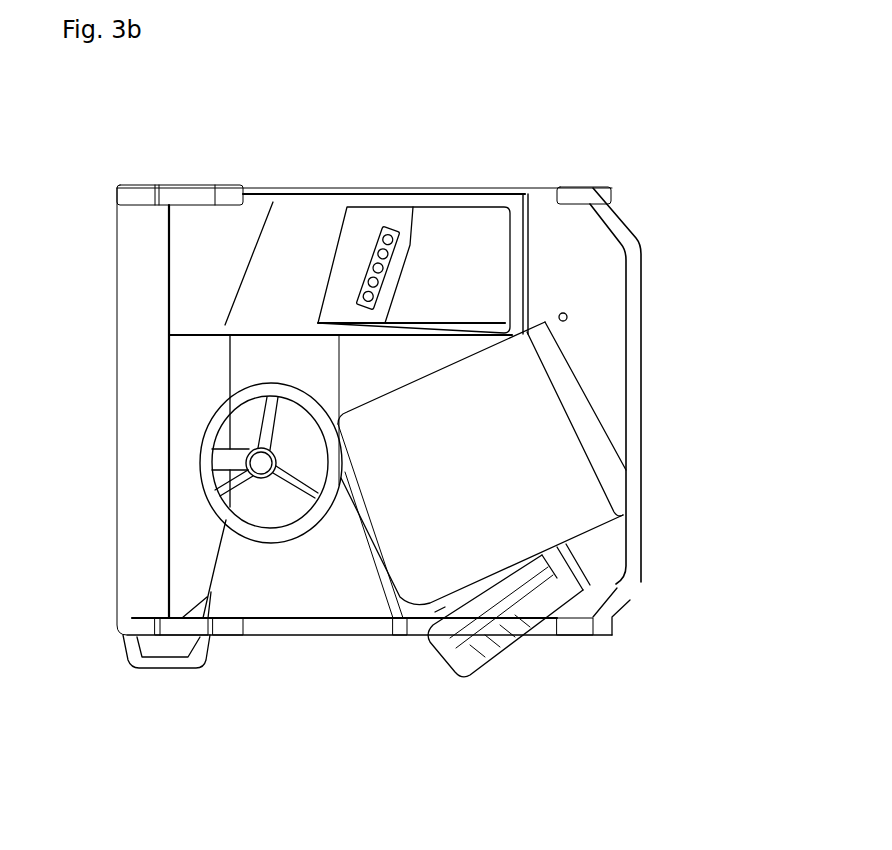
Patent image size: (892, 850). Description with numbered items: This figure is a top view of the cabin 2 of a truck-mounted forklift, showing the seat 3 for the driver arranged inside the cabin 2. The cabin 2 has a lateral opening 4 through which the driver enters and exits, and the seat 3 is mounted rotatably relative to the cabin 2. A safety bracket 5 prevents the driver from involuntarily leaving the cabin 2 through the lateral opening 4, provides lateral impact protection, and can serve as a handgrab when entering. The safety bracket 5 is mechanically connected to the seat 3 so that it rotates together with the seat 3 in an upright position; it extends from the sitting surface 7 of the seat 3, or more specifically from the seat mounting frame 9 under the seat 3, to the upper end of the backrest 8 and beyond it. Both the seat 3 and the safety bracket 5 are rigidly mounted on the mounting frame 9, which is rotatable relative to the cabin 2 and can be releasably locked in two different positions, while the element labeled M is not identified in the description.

The cabin 2 is at (558, 163).
The seat 3 is at (567, 316).
The lateral opening 4 is at (302, 643).
The safety bracket 5 is at (567, 595).
The sitting surface 7 is at (490, 453).
The backrest 8 is at (567, 387).
The mounting frame 9 is at (445, 607).
The motor M is at (210, 431).